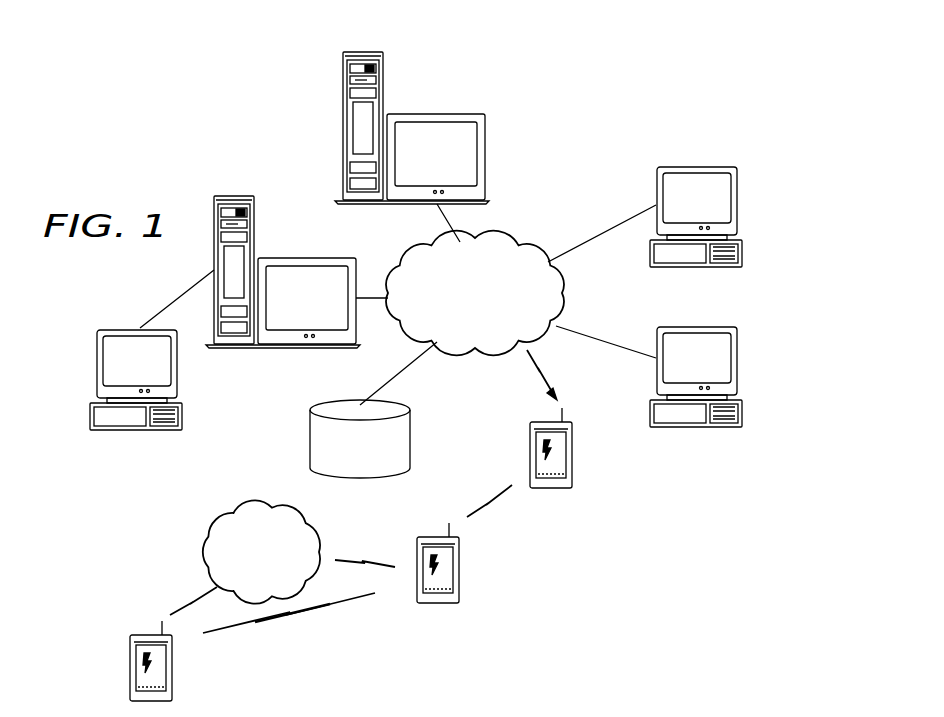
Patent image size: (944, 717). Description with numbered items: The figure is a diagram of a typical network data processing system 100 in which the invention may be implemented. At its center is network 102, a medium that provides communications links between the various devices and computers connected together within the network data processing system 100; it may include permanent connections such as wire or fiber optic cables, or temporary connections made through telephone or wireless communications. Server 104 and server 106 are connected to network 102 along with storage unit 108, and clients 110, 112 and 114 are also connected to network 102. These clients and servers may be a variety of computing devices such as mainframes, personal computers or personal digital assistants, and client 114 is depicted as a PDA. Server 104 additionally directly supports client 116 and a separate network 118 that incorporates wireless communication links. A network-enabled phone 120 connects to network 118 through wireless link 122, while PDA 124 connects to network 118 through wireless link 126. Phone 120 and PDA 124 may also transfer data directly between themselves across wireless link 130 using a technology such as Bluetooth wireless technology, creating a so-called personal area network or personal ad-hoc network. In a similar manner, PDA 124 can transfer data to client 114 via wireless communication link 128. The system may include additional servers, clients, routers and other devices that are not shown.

The network data processing system 100 is at (597, 106).
The network 102 is at (492, 318).
The server 104 is at (232, 196).
The server 106 is at (343, 131).
The storage unit 108 is at (310, 438).
The client 110 is at (737, 205).
The client 112 is at (737, 365).
The client 114 is at (572, 456).
The client 116 is at (95, 365).
The network 118 is at (215, 530).
The network-enabled phone 120 is at (130, 668).
The wireless link 122 is at (180, 606).
The PDA 124 is at (460, 578).
The wireless link 126 is at (352, 560).
The wireless communication link 128 is at (500, 488).
The wireless link 130 is at (246, 630).